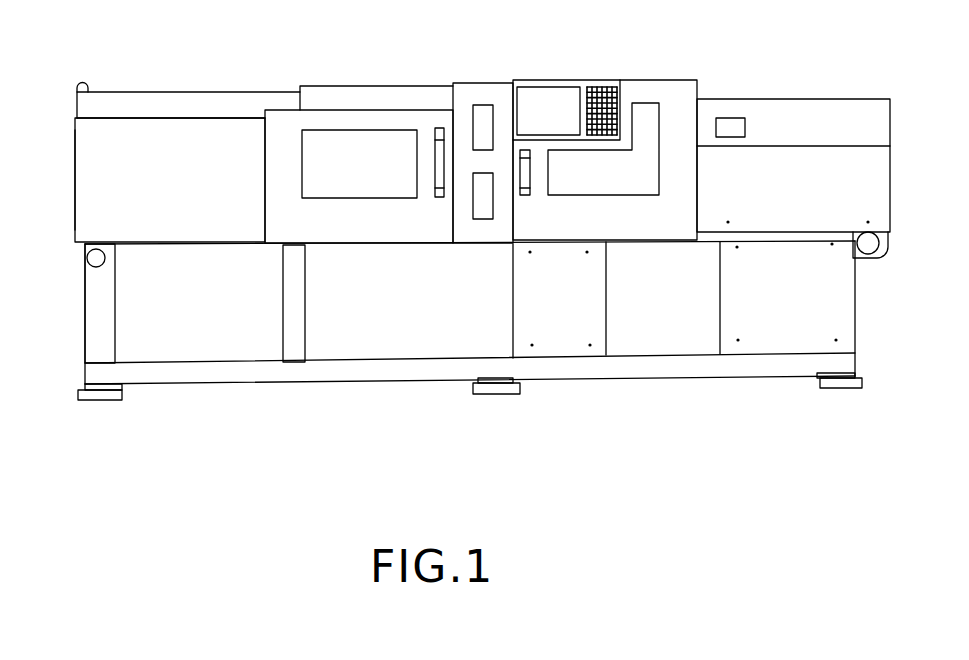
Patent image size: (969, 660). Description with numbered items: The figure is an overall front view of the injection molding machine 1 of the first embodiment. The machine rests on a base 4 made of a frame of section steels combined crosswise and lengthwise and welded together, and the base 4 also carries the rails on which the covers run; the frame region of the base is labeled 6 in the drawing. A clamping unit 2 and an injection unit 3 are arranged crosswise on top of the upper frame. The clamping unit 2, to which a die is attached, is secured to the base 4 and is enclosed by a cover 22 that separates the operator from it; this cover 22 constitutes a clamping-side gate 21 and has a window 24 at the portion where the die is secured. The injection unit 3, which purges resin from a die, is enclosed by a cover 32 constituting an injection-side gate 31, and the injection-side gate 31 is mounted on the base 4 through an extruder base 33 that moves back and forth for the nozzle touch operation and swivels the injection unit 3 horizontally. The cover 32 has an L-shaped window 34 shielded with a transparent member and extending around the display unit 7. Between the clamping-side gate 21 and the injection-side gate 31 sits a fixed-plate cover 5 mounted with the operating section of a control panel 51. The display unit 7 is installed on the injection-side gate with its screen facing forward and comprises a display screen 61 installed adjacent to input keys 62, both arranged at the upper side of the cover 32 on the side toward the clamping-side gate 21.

The injection molding machine 1 is at (405, 445).
The clamping unit 2 is at (182, 90).
The clamping-side gate 21 is at (330, 85).
The cover 22 is at (345, 225).
The window 24 is at (316, 153).
The injection unit 3 is at (725, 75).
The injection-side gate 31 is at (677, 85).
The cover 32 is at (623, 215).
The extruder base 33 is at (808, 238).
The window 34 is at (640, 170).
The base 4 is at (62, 204).
The fixed-plate cover 5 is at (485, 93).
The control panel 51 is at (480, 220).
The base frame 6 is at (177, 343).
The display unit 7 is at (522, 62).
The display screen 61 is at (553, 92).
The input keys 62 is at (597, 88).